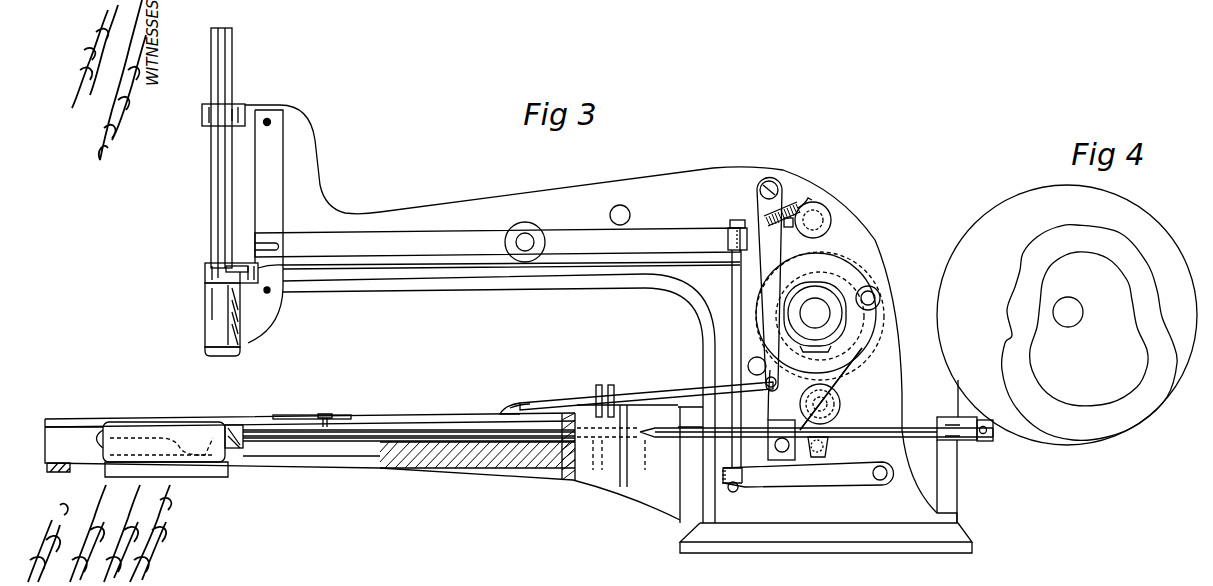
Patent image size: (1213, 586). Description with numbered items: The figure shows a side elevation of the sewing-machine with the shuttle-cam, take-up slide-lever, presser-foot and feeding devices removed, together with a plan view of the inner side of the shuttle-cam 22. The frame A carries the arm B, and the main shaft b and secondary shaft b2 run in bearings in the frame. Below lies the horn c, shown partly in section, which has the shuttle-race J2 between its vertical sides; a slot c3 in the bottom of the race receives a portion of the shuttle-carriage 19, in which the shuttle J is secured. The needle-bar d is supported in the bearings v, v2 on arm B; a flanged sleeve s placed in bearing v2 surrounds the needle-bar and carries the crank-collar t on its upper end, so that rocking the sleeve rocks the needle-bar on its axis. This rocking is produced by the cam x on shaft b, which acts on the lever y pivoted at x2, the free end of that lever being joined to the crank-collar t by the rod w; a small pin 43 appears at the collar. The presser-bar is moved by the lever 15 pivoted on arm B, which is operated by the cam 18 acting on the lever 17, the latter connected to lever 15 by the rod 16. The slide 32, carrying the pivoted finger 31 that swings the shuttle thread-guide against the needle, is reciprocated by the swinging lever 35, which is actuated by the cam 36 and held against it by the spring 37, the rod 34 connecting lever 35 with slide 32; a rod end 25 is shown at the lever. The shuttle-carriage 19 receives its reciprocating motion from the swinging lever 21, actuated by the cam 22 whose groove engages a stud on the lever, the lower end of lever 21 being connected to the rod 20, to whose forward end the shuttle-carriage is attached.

In FIG. 3, the needle-bar d is at (211, 181).
In FIG. 3, the bearing v is at (202, 110).
In FIG. 3, the arm B is at (479, 224).
In FIG. 3, the frame A is at (627, 360).
In FIG. 3, the lever 15 is at (418, 240).
In FIG. 3, the rod w is at (296, 277).
In FIG. 3, the crank-collar t is at (205, 271).
In FIG. 3, the pin 43 is at (240, 266).
In FIG. 3, the bearing v2 is at (204, 315).
In FIG. 3, the sleeve s is at (246, 350).
In FIG. 3, the rod 16 is at (732, 287).
In FIG. 3, the swinging lever 35 is at (769, 285).
In FIG. 3, the spring 37 is at (797, 208).
In FIG. 3, the main shaft b is at (820, 316).
In FIG. 3, the cam 36 is at (815, 352).
In FIG. 3, the cam x is at (845, 288).
In FIG. 3, the swinging lever 21 is at (770, 403).
In FIG. 3, the lever y is at (780, 257).
In FIG. 3, the pivot x2 is at (765, 378).
In FIG. 3, the cam 18 is at (837, 391).
In FIG. 3, the secondary shaft b2 is at (820, 404).
In FIG. 3, the lever 17 is at (824, 462).
In FIG. 3, the rod 20 is at (256, 450).
In FIG. 3, the horn c is at (414, 470).
In FIG. 3, the slot c3 is at (262, 468).
In FIG. 3, the shuttle J is at (161, 442).
In FIG. 3, the shuttle-race J2 is at (214, 458).
In FIG. 3, the shuttle-carriage 19 is at (218, 462).
In FIG. 3, the pivoted finger 31 is at (288, 414).
In FIG. 3, the rod 25 is at (617, 388).
In FIG. 3, the rod 34 is at (553, 400).
In FIG. 3, the slide 32 is at (420, 414).
In FIG. 4, the cam 22 is at (1067, 315).